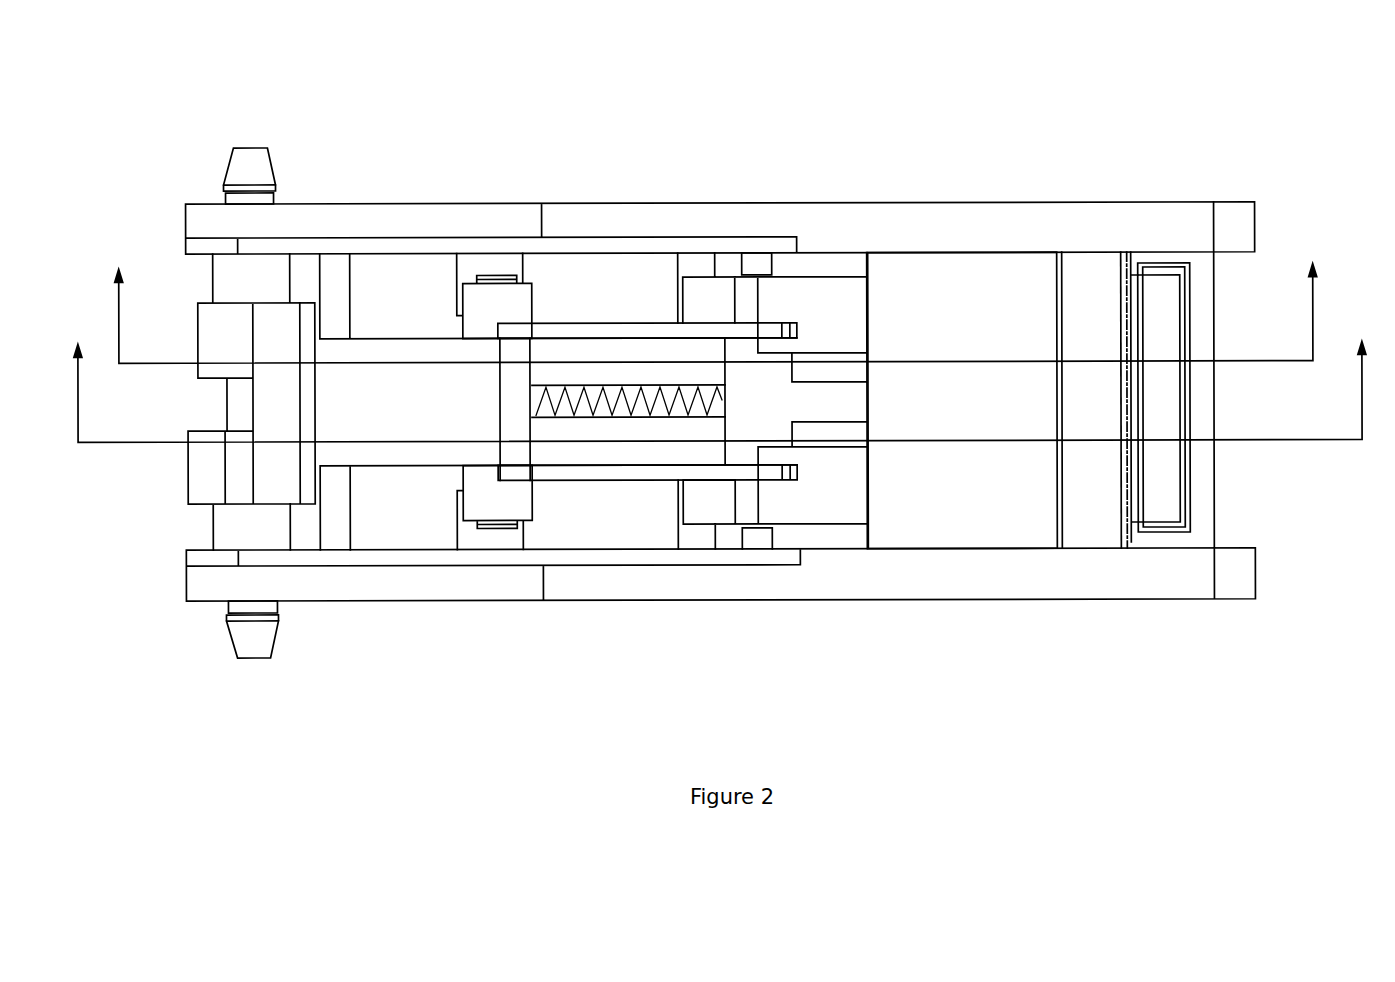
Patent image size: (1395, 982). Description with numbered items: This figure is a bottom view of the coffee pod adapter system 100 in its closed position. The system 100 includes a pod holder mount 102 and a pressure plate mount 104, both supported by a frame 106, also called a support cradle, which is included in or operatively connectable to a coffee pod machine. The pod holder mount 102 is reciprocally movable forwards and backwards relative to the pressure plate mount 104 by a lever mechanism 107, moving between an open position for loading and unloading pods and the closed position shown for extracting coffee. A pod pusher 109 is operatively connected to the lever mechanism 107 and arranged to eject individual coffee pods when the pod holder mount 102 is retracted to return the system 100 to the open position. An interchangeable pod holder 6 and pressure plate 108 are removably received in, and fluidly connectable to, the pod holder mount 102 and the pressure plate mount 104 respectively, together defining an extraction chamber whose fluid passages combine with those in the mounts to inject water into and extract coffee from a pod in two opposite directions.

The coffee pod adapter system 100 is at (1014, 124).
The frame 106 is at (720, 202).
The pressure plate mount 104 is at (1217, 487).
The lever mechanism 107 is at (405, 465).
The pod pusher 109 is at (627, 417).
The pod holder mount 102 is at (958, 527).
The pod holder 6 is at (1097, 527).
The pressure plate 108 is at (1165, 510).